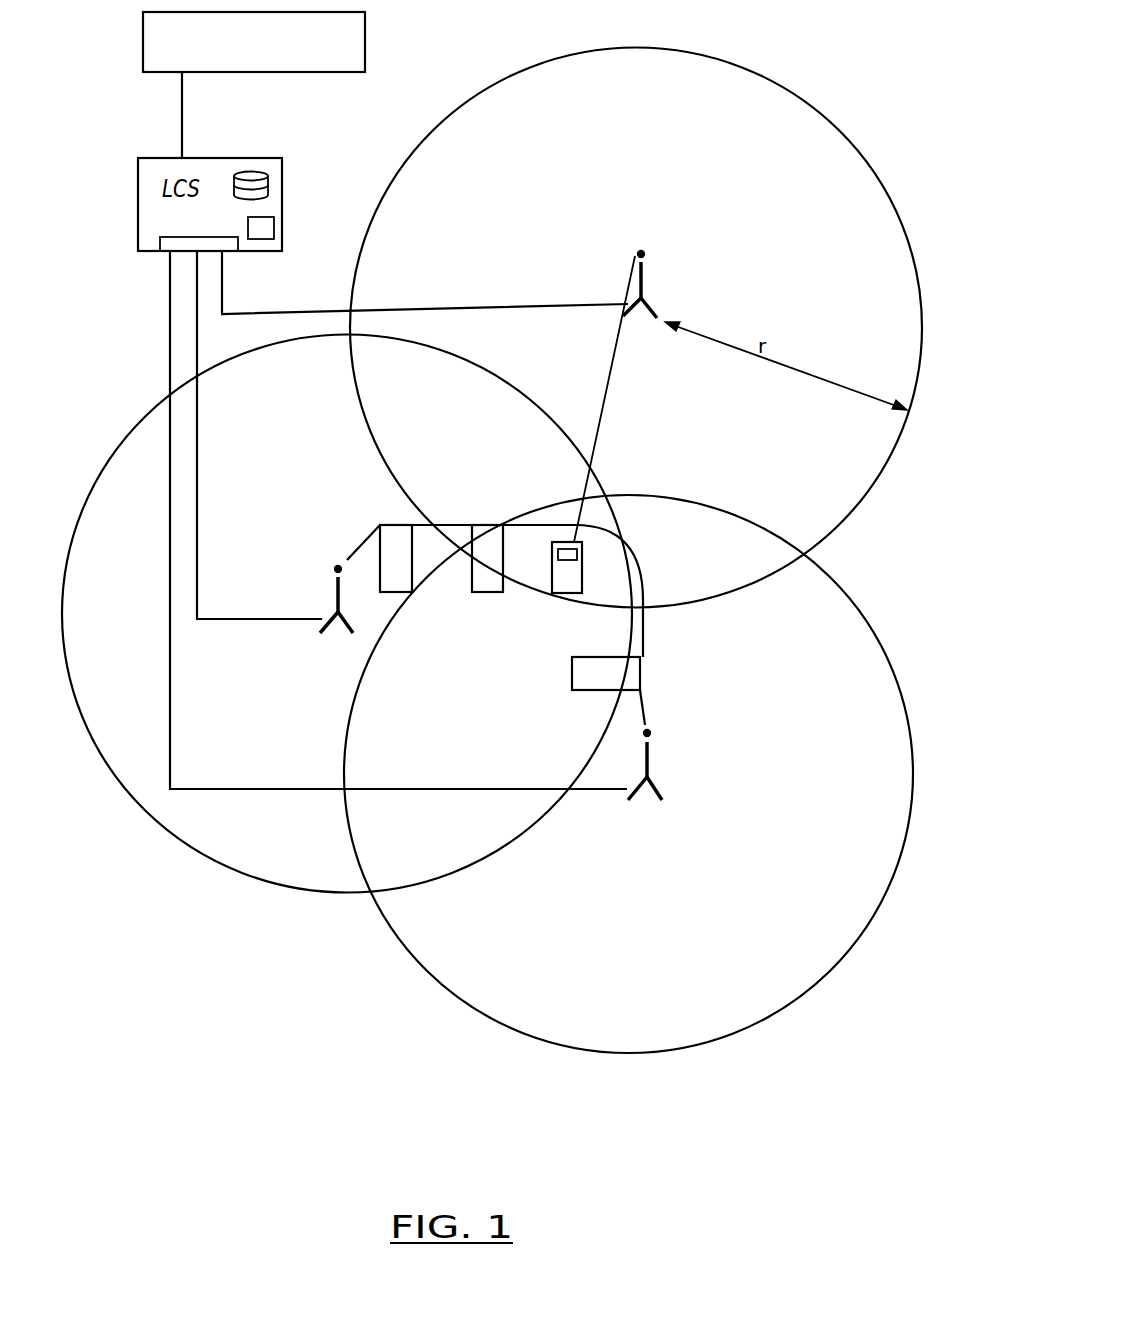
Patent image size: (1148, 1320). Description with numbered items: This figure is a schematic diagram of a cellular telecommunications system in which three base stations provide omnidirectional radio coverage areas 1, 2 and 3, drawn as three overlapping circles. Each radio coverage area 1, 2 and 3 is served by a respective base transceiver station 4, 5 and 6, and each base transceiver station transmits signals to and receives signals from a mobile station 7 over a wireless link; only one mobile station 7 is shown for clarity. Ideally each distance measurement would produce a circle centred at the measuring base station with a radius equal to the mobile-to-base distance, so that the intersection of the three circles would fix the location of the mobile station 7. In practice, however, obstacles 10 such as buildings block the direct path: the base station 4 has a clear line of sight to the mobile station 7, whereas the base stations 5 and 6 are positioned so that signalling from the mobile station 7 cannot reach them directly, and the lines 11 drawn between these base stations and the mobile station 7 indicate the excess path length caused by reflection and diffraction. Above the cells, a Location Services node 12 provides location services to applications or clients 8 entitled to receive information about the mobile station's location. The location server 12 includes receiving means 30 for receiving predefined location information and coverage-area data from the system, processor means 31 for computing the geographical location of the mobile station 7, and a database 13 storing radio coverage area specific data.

The radio coverage area 1 is at (770, 191).
The radio coverage area 2 is at (280, 497).
The radio coverage area 3 is at (838, 737).
The base transceiver station 4 is at (646, 276).
The base transceiver station 5 is at (333, 594).
The base transceiver station 6 is at (652, 757).
The mobile station 7 is at (578, 568).
The applications or clients 8 is at (365, 42).
The obstacles 10 is at (578, 673).
The connections to base stations 11 is at (168, 327).
The Location Services node 12 is at (227, 173).
The database 13 is at (258, 193).
The receiving means 30 is at (167, 242).
The processor means 31 is at (265, 227).